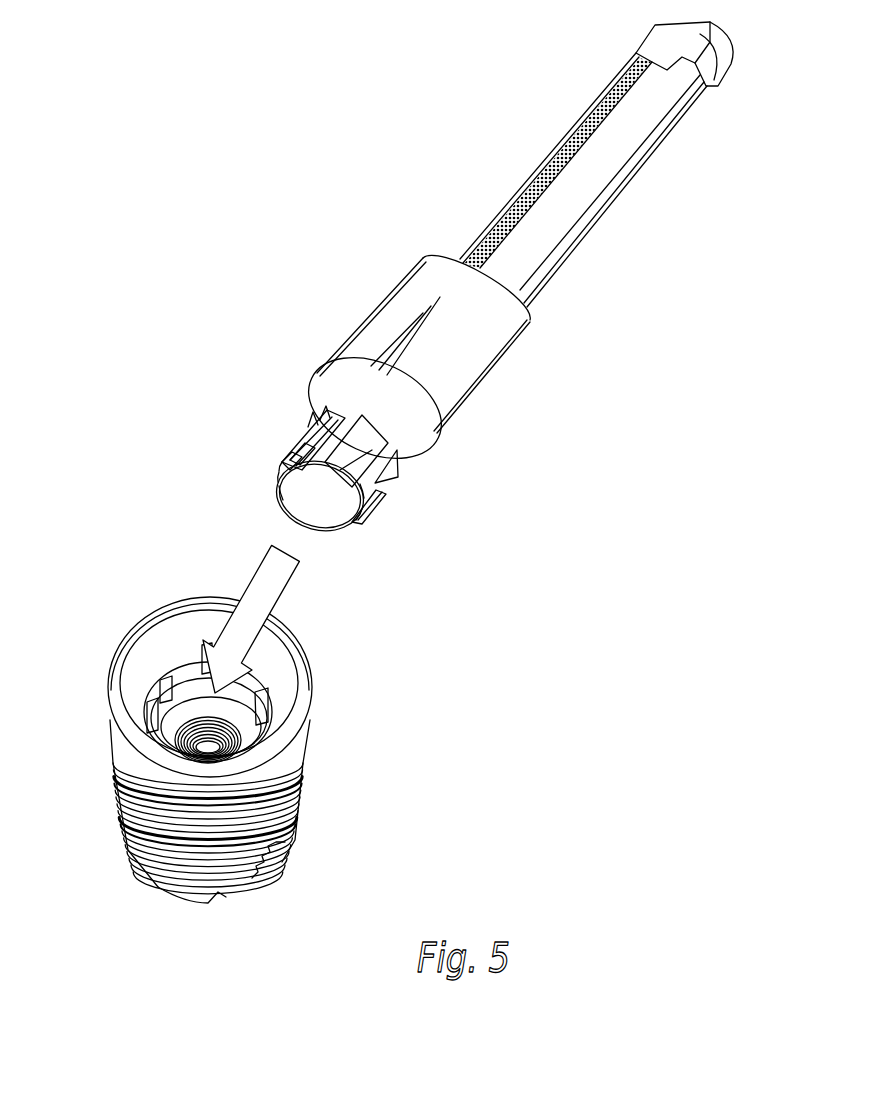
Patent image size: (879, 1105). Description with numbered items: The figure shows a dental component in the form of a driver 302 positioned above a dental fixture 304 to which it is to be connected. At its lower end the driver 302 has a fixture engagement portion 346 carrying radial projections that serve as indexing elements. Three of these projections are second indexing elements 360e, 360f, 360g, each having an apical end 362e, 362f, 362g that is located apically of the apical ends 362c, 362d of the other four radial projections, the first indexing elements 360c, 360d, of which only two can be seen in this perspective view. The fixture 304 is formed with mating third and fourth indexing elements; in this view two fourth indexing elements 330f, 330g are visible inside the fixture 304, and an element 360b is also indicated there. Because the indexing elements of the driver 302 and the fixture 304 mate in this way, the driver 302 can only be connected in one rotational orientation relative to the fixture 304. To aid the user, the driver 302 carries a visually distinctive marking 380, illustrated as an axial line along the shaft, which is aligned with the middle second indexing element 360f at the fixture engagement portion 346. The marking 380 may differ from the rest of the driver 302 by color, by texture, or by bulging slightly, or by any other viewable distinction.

The driver 302 is at (567, 227).
The visually distinctive marking 380 is at (553, 157).
The fixture engagement portion 346 is at (388, 443).
The engagement tab 360b is at (270, 697).
The first indexing element 360c is at (368, 511).
The first indexing element 360d is at (395, 490).
The second indexing element 360e is at (338, 420).
The second indexing element 360f is at (307, 440).
The second indexing element 360g is at (286, 462).
The apical end 362c is at (358, 514).
The apical end 362d is at (363, 497).
The apical end 362e is at (284, 488).
The apical end 362f is at (280, 474).
The apical end 362g is at (278, 467).
The fourth indexing element 330f is at (147, 718).
The fourth indexing element 330g is at (150, 677).
The dental fixture 304 is at (333, 797).